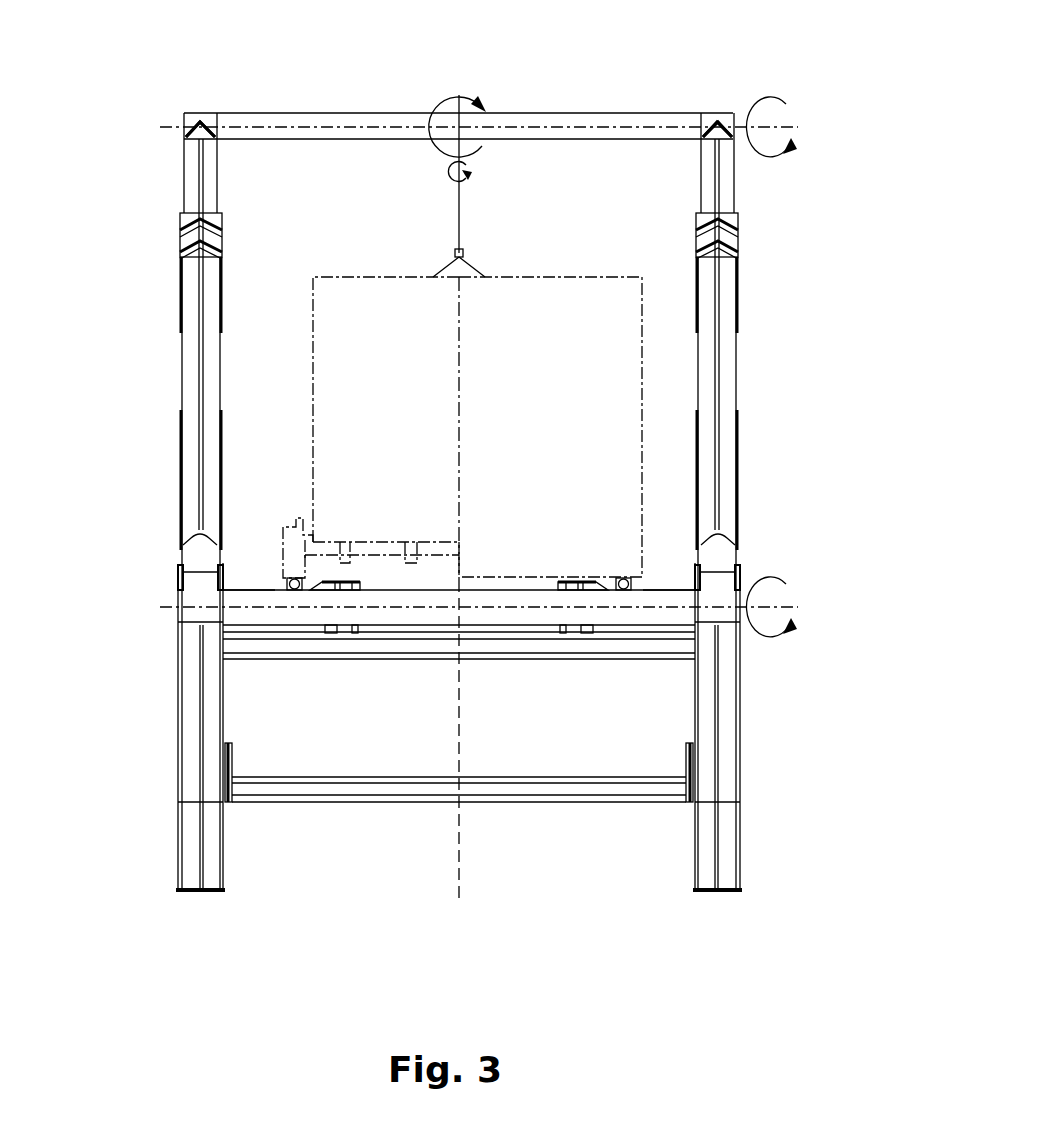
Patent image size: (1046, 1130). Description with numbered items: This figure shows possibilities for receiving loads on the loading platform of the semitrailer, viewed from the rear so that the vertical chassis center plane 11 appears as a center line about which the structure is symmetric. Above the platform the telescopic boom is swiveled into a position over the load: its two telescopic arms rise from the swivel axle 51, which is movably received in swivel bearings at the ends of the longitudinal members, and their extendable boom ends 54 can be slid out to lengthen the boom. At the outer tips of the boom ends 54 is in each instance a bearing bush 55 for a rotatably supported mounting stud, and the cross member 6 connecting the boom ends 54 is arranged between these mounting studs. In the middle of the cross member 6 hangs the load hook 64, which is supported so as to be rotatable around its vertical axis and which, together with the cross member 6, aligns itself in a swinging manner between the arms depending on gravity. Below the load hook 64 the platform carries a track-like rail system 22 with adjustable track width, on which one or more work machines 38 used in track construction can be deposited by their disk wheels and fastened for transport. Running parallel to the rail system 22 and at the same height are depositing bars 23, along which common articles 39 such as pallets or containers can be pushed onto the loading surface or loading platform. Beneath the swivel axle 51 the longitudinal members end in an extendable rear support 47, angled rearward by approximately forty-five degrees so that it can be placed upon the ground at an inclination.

The cross member 6 is at (353, 112).
The bearing bush 55 is at (182, 118).
The chassis center plane 11 is at (184, 178).
The boom end 54 is at (733, 183).
The load hook 64 is at (470, 176).
The work machine 38 is at (312, 362).
The article 39 is at (645, 372).
The swivel axle 51 is at (647, 608).
The rear support 47 is at (743, 788).
The rail system 22 is at (612, 592).
The depositing bars 23 is at (350, 592).